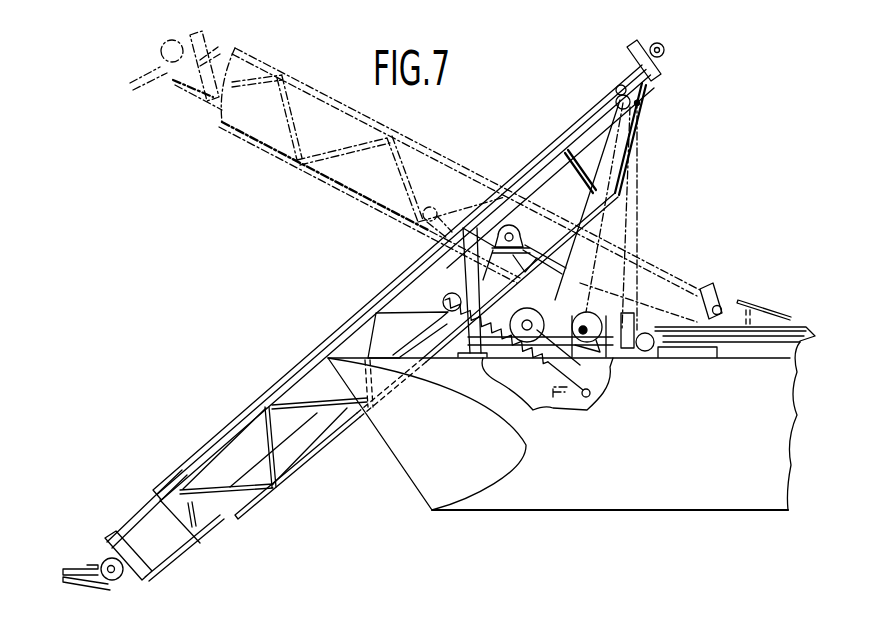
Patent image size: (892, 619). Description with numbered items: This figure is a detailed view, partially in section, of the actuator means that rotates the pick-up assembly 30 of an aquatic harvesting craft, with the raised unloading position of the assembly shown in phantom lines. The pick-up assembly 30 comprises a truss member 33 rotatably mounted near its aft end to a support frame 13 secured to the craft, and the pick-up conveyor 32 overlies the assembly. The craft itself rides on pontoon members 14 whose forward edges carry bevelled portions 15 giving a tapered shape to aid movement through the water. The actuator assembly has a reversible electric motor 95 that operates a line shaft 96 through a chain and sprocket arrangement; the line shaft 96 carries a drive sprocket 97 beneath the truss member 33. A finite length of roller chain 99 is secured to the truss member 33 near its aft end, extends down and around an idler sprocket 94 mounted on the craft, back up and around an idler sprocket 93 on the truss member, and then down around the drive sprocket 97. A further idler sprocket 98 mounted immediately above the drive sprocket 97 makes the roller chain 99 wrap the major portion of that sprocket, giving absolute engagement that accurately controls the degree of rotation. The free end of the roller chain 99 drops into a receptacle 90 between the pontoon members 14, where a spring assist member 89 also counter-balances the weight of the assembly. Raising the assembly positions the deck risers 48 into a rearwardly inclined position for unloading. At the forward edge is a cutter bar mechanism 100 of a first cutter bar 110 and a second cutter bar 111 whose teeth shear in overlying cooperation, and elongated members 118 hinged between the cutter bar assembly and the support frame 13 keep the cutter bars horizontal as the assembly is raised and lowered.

The support frame 13 is at (552, 283).
The pontoon members 14 is at (673, 468).
The bevelled portions 15 is at (449, 446).
The pick-up assembly 30 is at (323, 197).
The pick-up conveyor 32 is at (225, 427).
The truss member 33 is at (266, 440).
The deck risers 48 is at (795, 297).
The spring assist member 89 is at (430, 325).
The receptacle 90 is at (553, 390).
The idler sprocket 93 is at (620, 74).
The idler sprocket 94 is at (643, 308).
The electric motor 95 is at (476, 283).
The line shaft 96 is at (600, 352).
The drive sprocket 97 is at (607, 347).
The idler sprocket 98 is at (588, 313).
The roller chain 99 is at (638, 246).
The cutter bar mechanism 100 is at (101, 590).
The first cutter bar 110 is at (66, 568).
The second cutter bar 111 is at (66, 580).
The elongated members 118 is at (310, 413).